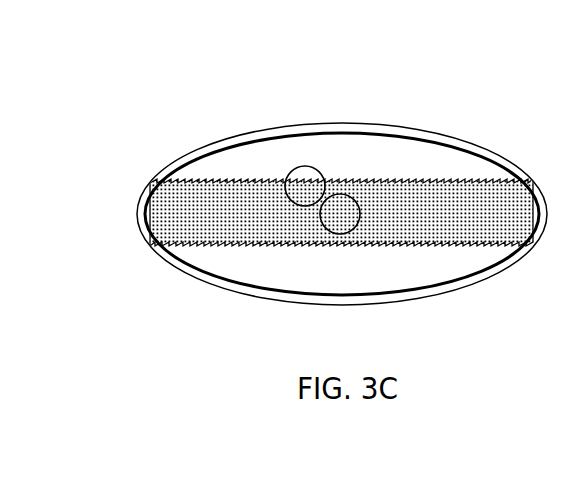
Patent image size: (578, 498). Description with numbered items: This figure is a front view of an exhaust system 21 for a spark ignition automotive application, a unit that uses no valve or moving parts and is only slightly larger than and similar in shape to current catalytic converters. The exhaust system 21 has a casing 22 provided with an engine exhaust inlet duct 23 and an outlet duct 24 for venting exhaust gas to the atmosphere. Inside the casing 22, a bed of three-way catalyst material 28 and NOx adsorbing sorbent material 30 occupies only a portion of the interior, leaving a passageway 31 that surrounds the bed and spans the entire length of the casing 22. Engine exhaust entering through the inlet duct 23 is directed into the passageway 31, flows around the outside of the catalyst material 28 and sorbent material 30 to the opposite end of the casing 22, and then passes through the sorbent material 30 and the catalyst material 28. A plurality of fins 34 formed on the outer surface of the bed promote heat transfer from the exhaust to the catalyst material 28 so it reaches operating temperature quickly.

The exhaust system 21 is at (347, 112).
The casing 22 is at (453, 138).
The engine exhaust inlet duct 23 is at (290, 196).
The outlet duct 24 is at (336, 222).
The three-way catalyst material 28 is at (198, 198).
The NOx adsorbing sorbent material 30 is at (231, 188).
The passageway 31 is at (378, 262).
The fins 34 is at (355, 179).